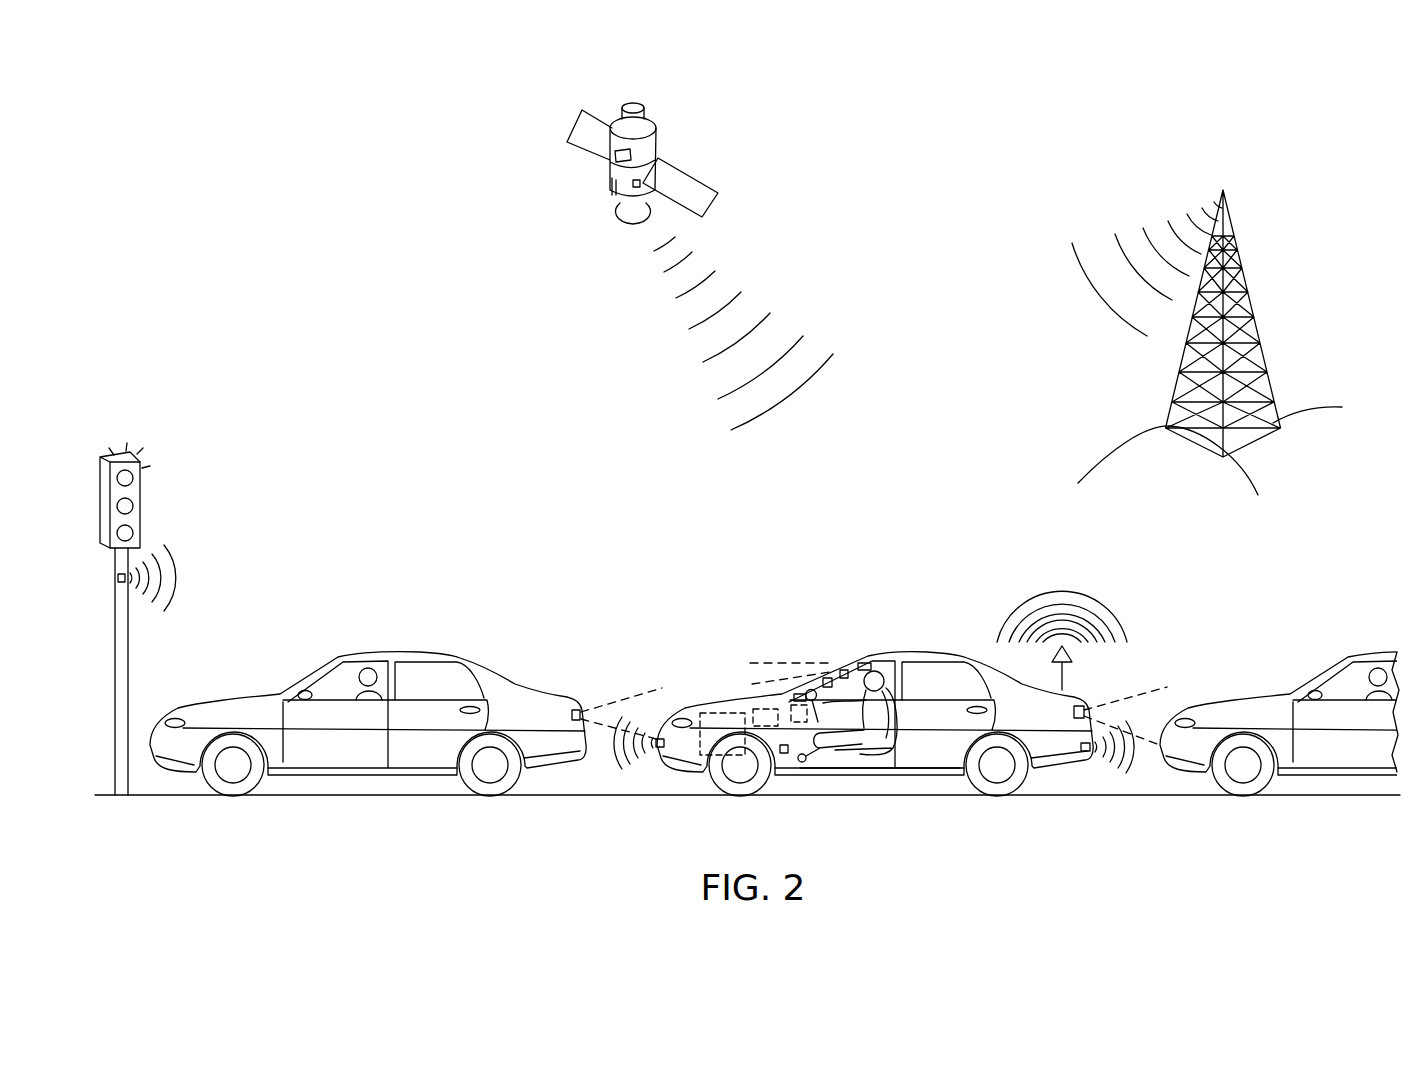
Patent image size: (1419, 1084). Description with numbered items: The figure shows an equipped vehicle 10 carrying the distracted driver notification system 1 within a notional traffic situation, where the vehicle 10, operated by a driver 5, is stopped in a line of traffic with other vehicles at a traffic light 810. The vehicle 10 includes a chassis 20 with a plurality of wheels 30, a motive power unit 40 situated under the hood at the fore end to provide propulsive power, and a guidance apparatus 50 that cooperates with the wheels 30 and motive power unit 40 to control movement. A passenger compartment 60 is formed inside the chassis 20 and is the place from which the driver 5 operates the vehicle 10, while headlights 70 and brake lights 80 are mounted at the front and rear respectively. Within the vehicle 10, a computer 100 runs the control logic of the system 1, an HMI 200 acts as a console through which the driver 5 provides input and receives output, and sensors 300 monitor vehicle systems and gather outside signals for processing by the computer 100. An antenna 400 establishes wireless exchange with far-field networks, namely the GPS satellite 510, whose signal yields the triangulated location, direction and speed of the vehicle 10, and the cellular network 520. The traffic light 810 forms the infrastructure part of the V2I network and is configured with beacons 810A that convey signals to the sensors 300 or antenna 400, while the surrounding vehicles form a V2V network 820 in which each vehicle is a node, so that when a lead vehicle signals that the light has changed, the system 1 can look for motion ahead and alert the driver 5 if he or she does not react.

The distracted driver notification system 1 is at (908, 598).
The driver 5 is at (886, 668).
The vehicle 10 is at (950, 656).
The chassis 20 is at (922, 760).
The wheels 30 is at (995, 780).
The motive power unit 40 is at (722, 713).
The guidance apparatus 50 is at (786, 752).
The passenger compartment 60 is at (880, 690).
The headlights 70 is at (672, 722).
The brake lights 80 is at (1074, 713).
The computer 100 is at (765, 708).
The HMI 200 is at (802, 742).
The sensors 300 is at (848, 670).
The antenna 400 is at (1072, 660).
The satellite 510 is at (684, 177).
The cellular network 520 is at (1230, 221).
The traffic light 810 is at (146, 512).
The beacons 810A is at (127, 581).
The V2V network 820 is at (452, 645).